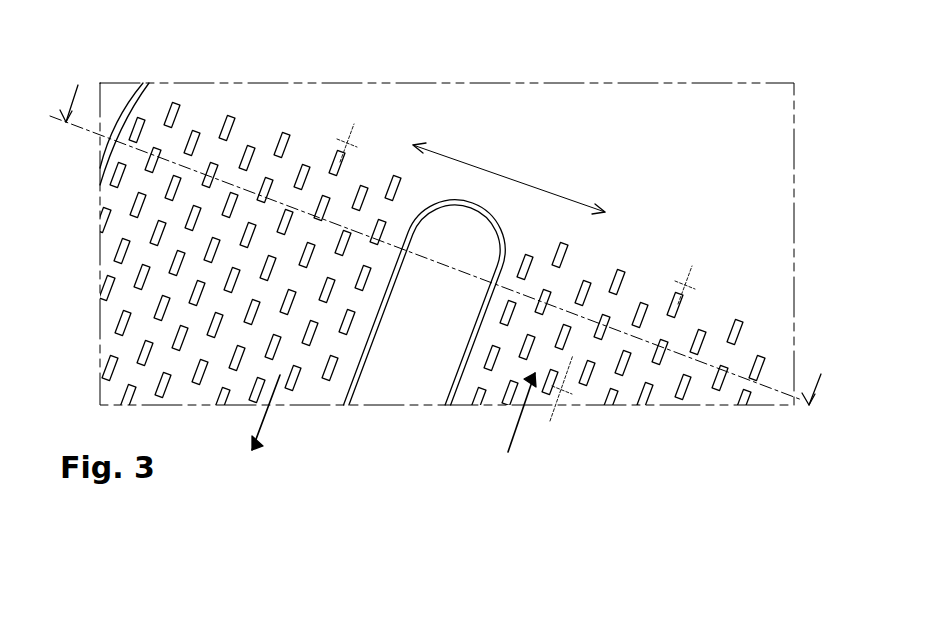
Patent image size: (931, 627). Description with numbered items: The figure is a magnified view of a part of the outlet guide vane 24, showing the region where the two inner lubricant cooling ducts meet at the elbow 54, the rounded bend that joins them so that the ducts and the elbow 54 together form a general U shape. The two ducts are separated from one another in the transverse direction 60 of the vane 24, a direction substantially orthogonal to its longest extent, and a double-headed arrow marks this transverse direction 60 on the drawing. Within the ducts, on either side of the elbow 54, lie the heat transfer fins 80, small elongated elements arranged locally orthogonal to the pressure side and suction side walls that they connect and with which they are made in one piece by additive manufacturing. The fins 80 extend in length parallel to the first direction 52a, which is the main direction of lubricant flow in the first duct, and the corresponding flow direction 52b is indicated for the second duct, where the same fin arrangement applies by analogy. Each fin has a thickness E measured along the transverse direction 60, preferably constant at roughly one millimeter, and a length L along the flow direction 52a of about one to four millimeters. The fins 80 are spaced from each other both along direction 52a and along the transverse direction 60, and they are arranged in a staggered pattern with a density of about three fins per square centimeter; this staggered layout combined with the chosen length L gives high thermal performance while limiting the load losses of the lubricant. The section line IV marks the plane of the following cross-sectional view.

The vane 24 is at (688, 76).
The elbow 54 is at (641, 128).
The transverse direction 60 is at (503, 176).
The fins 80 is at (213, 322).
The first direction 52a is at (510, 441).
The second direction 52b is at (261, 421).
The thickness E is at (357, 146).
The length L is at (562, 390).
The section line IV- IV is at (435, 241).